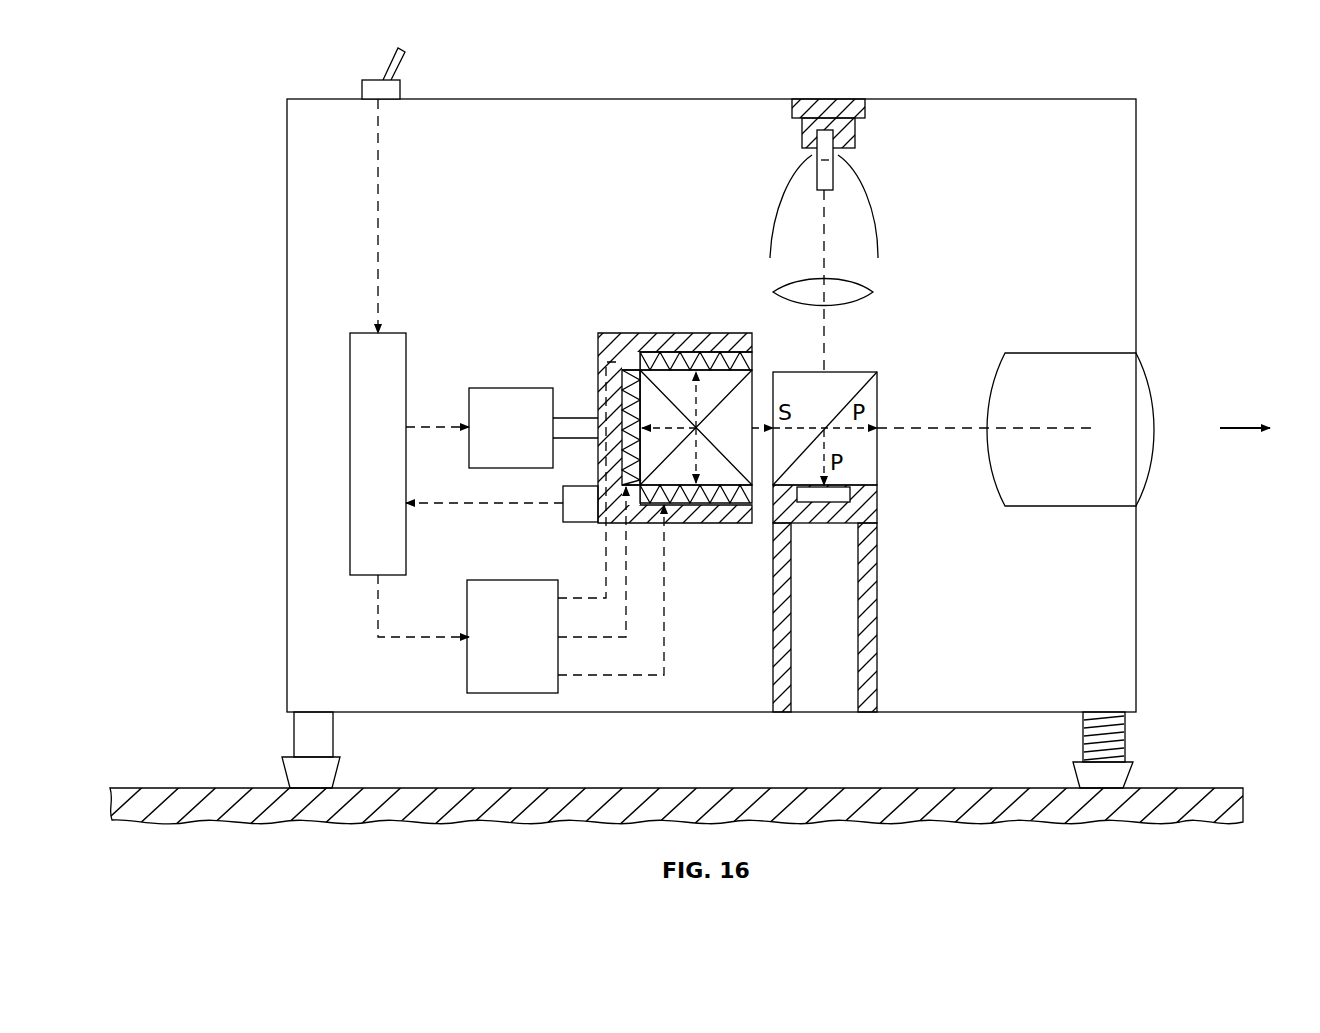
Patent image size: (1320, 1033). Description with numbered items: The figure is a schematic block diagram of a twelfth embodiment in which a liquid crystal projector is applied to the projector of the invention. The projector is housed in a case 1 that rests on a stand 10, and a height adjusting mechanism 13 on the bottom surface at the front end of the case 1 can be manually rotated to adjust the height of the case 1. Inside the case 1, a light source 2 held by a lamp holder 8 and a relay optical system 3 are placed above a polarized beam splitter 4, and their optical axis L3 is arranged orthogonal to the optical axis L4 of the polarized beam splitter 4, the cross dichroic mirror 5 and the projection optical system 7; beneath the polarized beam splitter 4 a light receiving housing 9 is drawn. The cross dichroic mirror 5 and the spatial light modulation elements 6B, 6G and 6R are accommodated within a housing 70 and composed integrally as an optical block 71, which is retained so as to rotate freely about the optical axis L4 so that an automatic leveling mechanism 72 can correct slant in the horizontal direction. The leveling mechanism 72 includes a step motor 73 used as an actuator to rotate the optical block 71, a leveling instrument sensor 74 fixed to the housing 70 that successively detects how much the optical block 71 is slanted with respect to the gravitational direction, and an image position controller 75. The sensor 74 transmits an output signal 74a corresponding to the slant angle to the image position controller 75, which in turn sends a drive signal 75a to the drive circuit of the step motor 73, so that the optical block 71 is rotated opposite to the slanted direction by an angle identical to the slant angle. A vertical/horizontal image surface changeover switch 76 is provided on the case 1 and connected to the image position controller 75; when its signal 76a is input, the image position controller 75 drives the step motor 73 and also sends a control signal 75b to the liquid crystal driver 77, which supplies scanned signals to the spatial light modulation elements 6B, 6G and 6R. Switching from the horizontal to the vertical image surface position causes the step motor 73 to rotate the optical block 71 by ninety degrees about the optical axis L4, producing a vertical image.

The case 1 is at (1078, 122).
The light source 2 is at (870, 200).
The relay optical system 3 is at (858, 290).
The polarized beam splitter 4 is at (855, 376).
The cross dichroic mirror 5 is at (718, 378).
The spatial light modulation element 6G is at (635, 360).
The spatial light modulation element 6B is at (694, 350).
The spatial light modulation element 6R is at (703, 510).
The projection optical system 7 is at (1085, 382).
The lamp holder 8 is at (840, 106).
The light receiving housing 9 is at (878, 612).
The stand 10 is at (1213, 802).
The height adjusting mechanism 13 is at (1100, 737).
The housing 70 is at (590, 385).
The optical block 71 is at (643, 318).
The automatic leveling mechanism 72 is at (460, 555).
The step motor 73 is at (503, 408).
The leveling instrument sensor 74 is at (578, 520).
The output signal 74a is at (440, 502).
The image position controller 75 is at (350, 345).
The drive signal 75a is at (430, 425).
The control signal 75b is at (378, 604).
The vertical/horizontal image surface changeover switch 76 is at (362, 90).
The signal 76a is at (378, 156).
The liquid crystal driver 77 is at (478, 675).
The optical axis L3 is at (822, 226).
The optical axis L4 is at (953, 426).